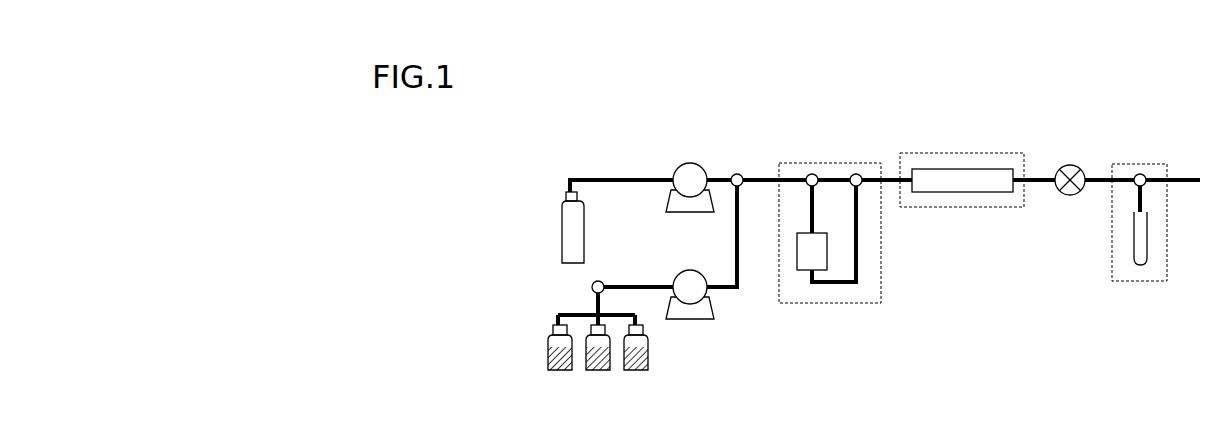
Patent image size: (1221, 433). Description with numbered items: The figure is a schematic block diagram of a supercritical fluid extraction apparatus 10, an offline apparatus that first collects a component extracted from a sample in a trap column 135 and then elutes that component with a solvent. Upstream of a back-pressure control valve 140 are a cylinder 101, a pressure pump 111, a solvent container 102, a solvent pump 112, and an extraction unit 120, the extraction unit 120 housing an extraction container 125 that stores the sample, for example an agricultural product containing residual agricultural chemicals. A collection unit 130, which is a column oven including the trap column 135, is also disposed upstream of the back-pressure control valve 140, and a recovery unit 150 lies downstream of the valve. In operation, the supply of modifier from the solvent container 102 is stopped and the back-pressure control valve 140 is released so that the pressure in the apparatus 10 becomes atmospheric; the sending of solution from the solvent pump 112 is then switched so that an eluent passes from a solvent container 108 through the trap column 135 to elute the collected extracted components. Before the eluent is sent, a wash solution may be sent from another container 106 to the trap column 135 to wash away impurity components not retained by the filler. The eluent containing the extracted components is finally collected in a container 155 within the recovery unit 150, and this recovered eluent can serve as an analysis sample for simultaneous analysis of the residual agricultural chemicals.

The supercritical fluid extraction apparatus 10 is at (541, 138).
The cylinder 101 is at (564, 233).
The solvent container 102 is at (560, 372).
The another container 106 is at (598, 372).
The solvent container 108 is at (636, 372).
The pressure pump 111 is at (684, 172).
The solvent pump 112 is at (684, 279).
The extraction unit 120 is at (824, 219).
The extraction container 125 is at (820, 236).
The collection unit 130 is at (956, 182).
The trap column 135 is at (965, 185).
The back-pressure control valve 140 is at (1068, 168).
The recovery unit 150 is at (1159, 197).
The container 155 is at (1148, 240).